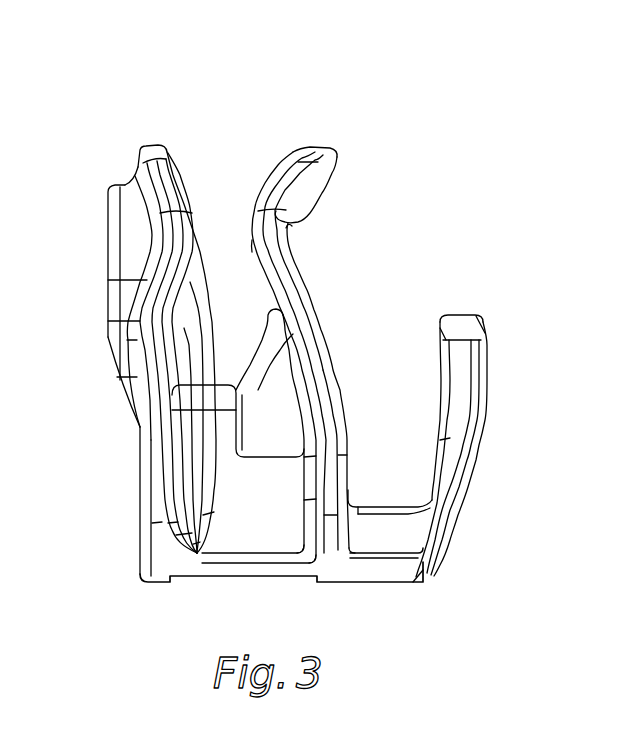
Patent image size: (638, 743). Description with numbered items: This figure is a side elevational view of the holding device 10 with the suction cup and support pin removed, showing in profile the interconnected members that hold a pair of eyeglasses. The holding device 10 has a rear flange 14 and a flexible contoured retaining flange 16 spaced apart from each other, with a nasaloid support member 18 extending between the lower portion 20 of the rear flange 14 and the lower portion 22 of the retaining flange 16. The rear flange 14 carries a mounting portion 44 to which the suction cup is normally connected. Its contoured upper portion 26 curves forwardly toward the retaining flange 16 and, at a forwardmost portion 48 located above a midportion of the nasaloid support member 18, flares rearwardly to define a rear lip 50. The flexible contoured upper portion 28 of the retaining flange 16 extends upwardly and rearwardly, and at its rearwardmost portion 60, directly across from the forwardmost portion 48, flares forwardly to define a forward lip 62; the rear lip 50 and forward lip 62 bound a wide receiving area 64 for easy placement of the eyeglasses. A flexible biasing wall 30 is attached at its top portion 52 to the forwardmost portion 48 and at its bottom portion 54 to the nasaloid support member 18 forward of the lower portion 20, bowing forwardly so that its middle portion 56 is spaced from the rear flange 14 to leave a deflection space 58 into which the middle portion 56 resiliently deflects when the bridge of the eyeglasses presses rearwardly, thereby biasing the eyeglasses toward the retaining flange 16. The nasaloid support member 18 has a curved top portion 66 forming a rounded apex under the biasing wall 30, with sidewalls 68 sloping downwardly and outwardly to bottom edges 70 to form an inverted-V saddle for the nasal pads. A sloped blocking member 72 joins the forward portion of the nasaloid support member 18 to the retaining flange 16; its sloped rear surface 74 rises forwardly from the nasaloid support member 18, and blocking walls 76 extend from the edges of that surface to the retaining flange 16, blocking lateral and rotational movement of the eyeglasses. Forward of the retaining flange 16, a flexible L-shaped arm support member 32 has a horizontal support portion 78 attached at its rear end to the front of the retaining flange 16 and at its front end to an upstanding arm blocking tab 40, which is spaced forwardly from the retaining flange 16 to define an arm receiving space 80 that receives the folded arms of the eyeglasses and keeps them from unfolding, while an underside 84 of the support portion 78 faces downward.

The holding device 10 is at (365, 55).
The rear flange 14 is at (164, 165).
The retaining flange 16 is at (302, 167).
The nasaloid support member 18 is at (253, 488).
The lower portion 20 is at (158, 525).
The lower portion 22 is at (332, 507).
The upper portion 26 is at (172, 207).
The upper portion 28 is at (290, 180).
The biasing wall 30 is at (205, 295).
The arm support member 32 is at (437, 497).
The arm blocking tab 40 is at (453, 350).
The mounting portion 44 is at (123, 200).
The forwardmost portion 48 is at (191, 213).
The rear lip 50 is at (145, 153).
The top portion 52 is at (202, 257).
The bottom portion 54 is at (200, 483).
The middle portion 56 is at (200, 316).
The deflection space 58 is at (183, 350).
The rearwardmost portion 60 is at (258, 225).
The forward lip 62 is at (316, 160).
The receiving area 64 is at (320, 212).
The top portion 66 is at (187, 393).
The sidewalls 68 is at (210, 538).
The bottom edges 70 is at (200, 583).
The blocking member 72 is at (280, 373).
The sloped rear surface 74 is at (282, 303).
The blocking walls 76 is at (285, 413).
The support portion 78 is at (397, 535).
The arm receiving space 80 is at (397, 336).
The underside 84 is at (405, 583).